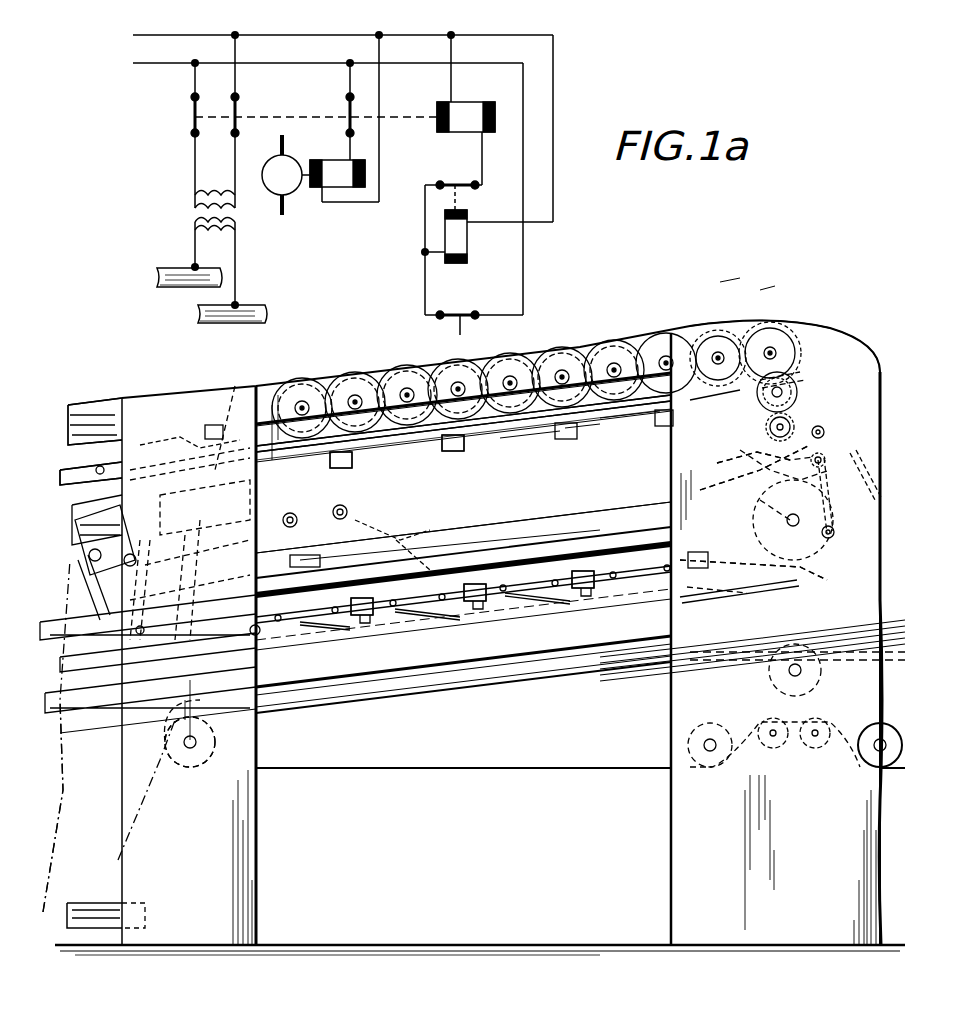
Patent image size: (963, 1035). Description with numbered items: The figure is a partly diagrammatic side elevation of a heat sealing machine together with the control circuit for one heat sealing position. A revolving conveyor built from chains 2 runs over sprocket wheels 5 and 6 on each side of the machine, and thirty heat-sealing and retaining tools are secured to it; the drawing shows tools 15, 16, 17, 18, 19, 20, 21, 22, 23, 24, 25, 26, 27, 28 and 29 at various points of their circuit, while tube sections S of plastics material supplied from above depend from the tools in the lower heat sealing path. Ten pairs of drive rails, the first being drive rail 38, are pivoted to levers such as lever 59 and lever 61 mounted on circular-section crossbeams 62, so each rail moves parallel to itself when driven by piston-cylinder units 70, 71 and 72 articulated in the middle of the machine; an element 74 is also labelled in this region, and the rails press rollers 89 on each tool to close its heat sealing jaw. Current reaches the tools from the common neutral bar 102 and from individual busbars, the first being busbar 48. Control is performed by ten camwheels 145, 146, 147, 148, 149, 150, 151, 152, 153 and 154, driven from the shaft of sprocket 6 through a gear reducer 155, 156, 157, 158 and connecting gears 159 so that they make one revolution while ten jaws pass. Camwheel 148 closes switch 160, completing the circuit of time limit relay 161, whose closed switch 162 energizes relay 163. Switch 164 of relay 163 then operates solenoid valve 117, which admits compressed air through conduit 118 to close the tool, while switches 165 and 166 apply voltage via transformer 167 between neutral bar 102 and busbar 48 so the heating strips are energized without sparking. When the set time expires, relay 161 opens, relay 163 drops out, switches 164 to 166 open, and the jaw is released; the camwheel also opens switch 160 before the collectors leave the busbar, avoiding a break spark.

The switch 166 is at (192, 124).
The switch 165 is at (238, 117).
The switch 164 is at (353, 117).
The relay 163 is at (472, 112).
The solenoid valve 117 is at (294, 162).
The conduit 118 is at (288, 206).
The transformer 167 is at (195, 222).
The busbar 48 is at (157, 276).
The neutral bar 102 is at (250, 308).
The switch 162 is at (450, 178).
The time limit relay 161 is at (460, 240).
The switch 160 is at (462, 308).
The camwheel 145 is at (305, 388).
The camwheel 146 is at (355, 340).
The camwheel 147 is at (407, 338).
The camwheel 148 is at (458, 335).
The camwheel 149 is at (510, 320).
The camwheel 150 is at (562, 318).
The camwheel 151 is at (612, 343).
The camwheel 152 is at (665, 305).
The camwheel 153 is at (718, 300).
The camwheel 154 is at (770, 290).
The gear reducer 155 is at (826, 432).
The gear reducer 156 is at (800, 395).
The gear reducer 157 is at (805, 373).
The gear reducer 158 is at (812, 322).
The connecting gears 159 is at (737, 296).
The heat-sealing and retaining tool 29 is at (100, 405).
The heat-sealing and retaining tool 28 is at (230, 386).
The guide 74 is at (170, 430).
The piston-cylinder unit 70 is at (70, 540).
The piston-cylinder unit 71 is at (105, 550).
The piston-cylinder unit 72 is at (180, 560).
The heat-sealing and retaining tool 27 is at (312, 452).
The chain 2 is at (356, 468).
The heat-sealing and retaining tool 26 is at (425, 438).
The roller 89 is at (465, 451).
The heat-sealing and retaining tool 25 is at (540, 428).
The heat-sealing and retaining tool 24 is at (650, 404).
The heat-sealing and retaining tool 23 is at (732, 392).
The sprocket wheel 6 is at (745, 455).
The sprocket wheel 5 is at (765, 478).
The heat-sealing and retaining tool 20 is at (714, 556).
The heat-sealing and retaining tool 21 is at (825, 580).
The heat-sealing and retaining tool 22 is at (880, 470).
The crossbeam 62 is at (283, 528).
The lever 59 is at (335, 520).
The lever 61 is at (390, 548).
The drive rail 38 is at (495, 530).
The heat-sealing and retaining tool 16 is at (290, 610).
The heat-sealing and retaining tool 15 is at (260, 625).
The heat-sealing and retaining tool 17 is at (370, 617).
The heat-sealing and retaining tool 18 is at (484, 603).
The heat-sealing and retaining tool 19 is at (594, 590).
The section of plastics material S is at (120, 840).